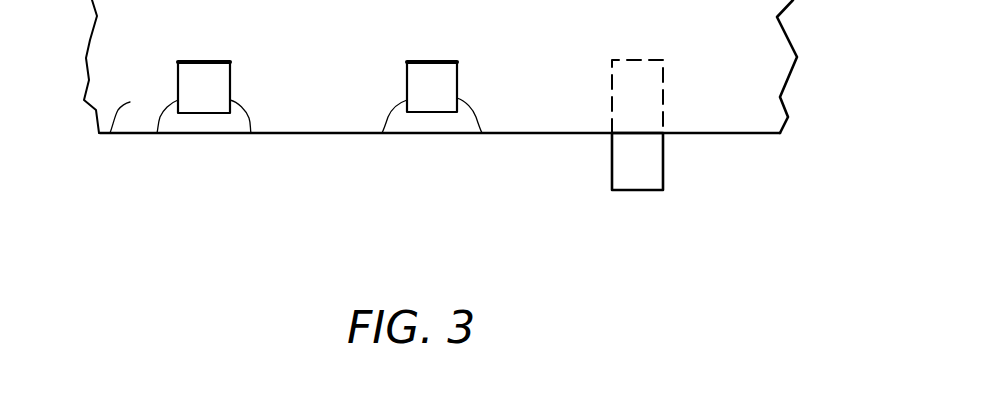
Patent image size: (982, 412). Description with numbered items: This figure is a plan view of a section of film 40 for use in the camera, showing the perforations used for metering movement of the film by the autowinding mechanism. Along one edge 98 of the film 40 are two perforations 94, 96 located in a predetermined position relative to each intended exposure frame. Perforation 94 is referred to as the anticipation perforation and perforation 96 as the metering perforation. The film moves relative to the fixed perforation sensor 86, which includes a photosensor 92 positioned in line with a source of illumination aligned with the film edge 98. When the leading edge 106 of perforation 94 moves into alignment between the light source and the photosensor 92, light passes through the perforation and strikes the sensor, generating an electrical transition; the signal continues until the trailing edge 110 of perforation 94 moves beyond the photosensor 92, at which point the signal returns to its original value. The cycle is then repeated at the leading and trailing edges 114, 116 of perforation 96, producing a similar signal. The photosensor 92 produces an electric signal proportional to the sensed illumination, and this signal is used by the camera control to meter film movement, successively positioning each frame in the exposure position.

The film 40 is at (112, 34).
The film edge 98 is at (110, 133).
The trailing edge of perforation 96 116 is at (157, 133).
The metering perforation 96 is at (205, 88).
The leading edge of perforation 96 114 is at (251, 133).
The trailing edge of perforation 94 110 is at (382, 133).
The anticipation perforation 94 is at (434, 87).
The leading edge of perforation 94 106 is at (482, 133).
The perforation sensor 86 is at (675, 203).
The photosensor 92 is at (637, 191).